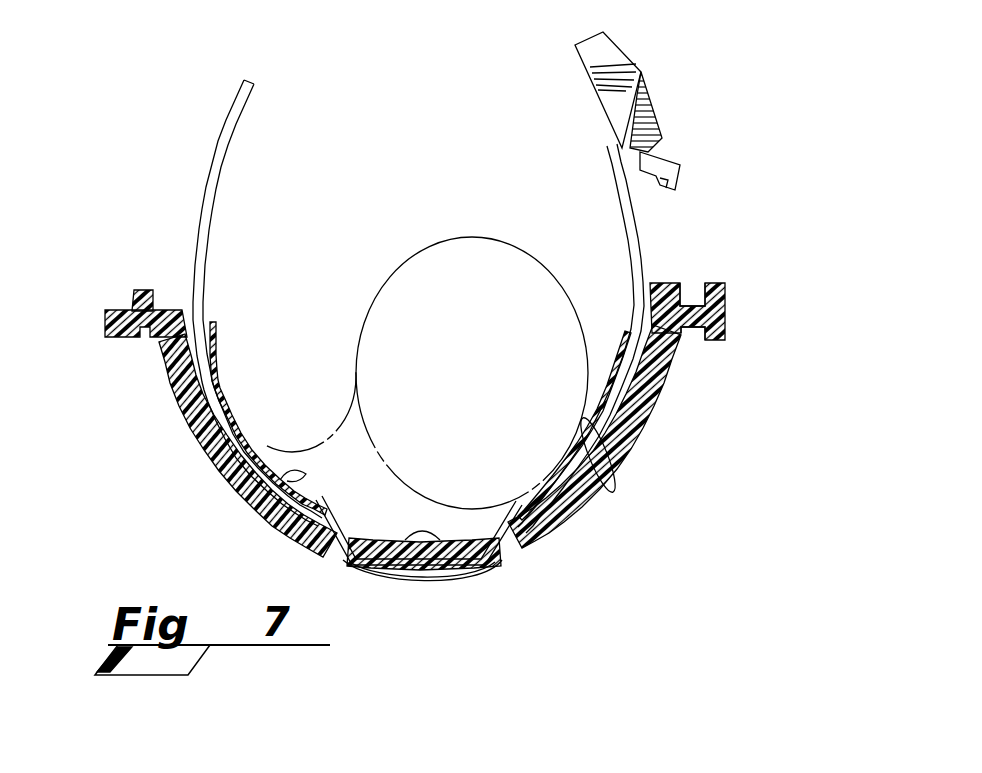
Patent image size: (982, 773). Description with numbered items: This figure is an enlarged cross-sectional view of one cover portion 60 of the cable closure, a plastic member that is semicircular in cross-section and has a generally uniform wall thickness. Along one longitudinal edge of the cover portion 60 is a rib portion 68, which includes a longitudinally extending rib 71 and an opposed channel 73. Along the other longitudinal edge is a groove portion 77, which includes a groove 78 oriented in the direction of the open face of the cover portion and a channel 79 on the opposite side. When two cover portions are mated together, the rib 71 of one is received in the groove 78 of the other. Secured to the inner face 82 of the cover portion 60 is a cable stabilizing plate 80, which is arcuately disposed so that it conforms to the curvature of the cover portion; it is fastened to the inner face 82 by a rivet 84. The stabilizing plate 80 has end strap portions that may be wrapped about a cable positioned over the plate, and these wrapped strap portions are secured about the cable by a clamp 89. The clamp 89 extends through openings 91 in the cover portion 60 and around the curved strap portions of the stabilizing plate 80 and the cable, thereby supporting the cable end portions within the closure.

The cover portion 60 is at (648, 417).
The rib portion 68 is at (105, 323).
The rib 71 is at (143, 290).
The channel 73 is at (142, 332).
The groove portion 77 is at (727, 304).
The groove 78 is at (694, 290).
The channel 79 is at (692, 338).
The cable stabilizing plate 80 is at (250, 490).
The inner face 82 is at (588, 445).
The rivet 84 is at (423, 580).
The clamp 89 is at (628, 65).
The openings 91 is at (325, 550).